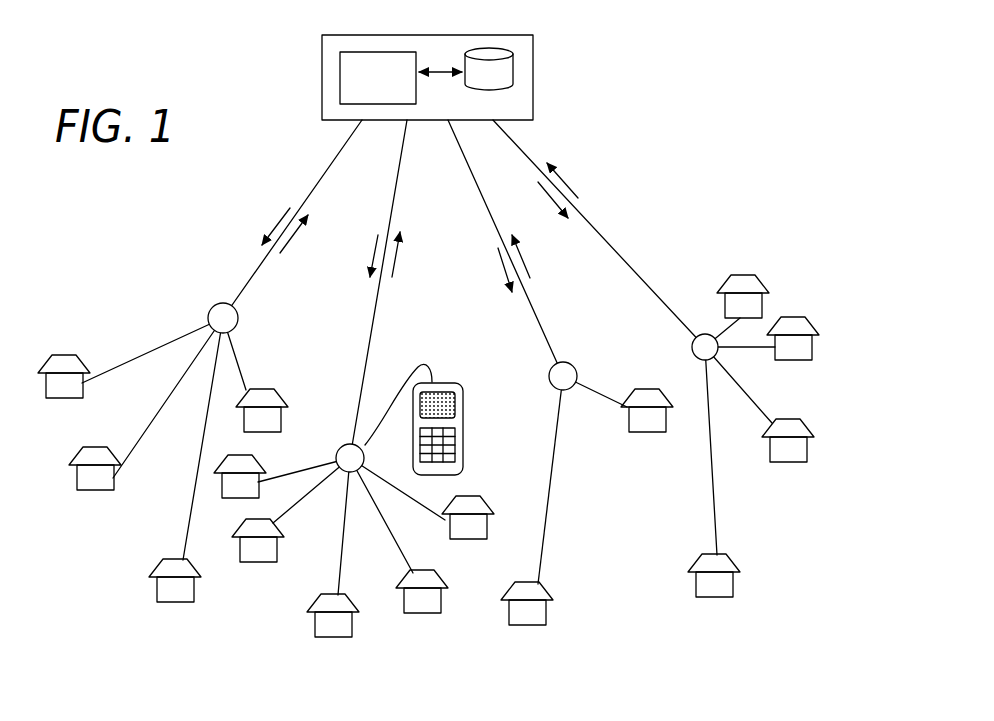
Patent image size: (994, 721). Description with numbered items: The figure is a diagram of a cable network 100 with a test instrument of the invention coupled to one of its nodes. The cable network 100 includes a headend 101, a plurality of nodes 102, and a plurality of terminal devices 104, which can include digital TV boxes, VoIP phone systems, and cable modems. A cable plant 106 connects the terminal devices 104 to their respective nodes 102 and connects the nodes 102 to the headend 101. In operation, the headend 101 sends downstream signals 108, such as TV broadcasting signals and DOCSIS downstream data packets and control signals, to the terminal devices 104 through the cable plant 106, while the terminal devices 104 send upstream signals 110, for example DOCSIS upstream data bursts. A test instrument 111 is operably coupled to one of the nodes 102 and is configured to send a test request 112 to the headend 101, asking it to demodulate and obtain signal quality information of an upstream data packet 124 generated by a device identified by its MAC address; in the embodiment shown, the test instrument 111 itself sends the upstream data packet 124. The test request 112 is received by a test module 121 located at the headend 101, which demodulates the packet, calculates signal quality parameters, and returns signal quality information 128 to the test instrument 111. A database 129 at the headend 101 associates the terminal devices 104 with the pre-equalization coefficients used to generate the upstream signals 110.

The cable network 100 is at (700, 42).
The headend 101 is at (322, 45).
The test module 121 is at (358, 93).
The database 129 is at (513, 63).
The node 102 is at (212, 307).
The terminal device 104 is at (95, 491).
The cable plant 106 is at (667, 197).
The downstream signals 108 is at (271, 227).
The upstream signals 110 is at (292, 234).
The test instrument 111 is at (464, 427).
The test request 112 is at (378, 416).
The upstream data packet 124 is at (419, 349).
The signal quality information 128 is at (355, 371).